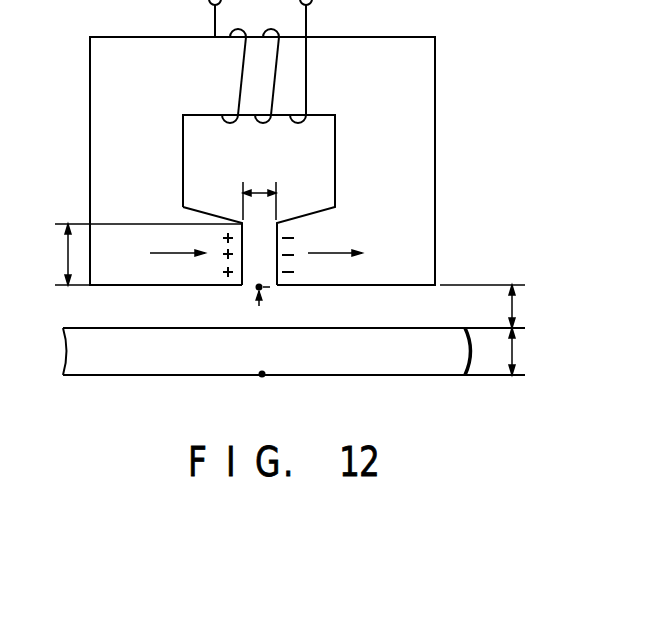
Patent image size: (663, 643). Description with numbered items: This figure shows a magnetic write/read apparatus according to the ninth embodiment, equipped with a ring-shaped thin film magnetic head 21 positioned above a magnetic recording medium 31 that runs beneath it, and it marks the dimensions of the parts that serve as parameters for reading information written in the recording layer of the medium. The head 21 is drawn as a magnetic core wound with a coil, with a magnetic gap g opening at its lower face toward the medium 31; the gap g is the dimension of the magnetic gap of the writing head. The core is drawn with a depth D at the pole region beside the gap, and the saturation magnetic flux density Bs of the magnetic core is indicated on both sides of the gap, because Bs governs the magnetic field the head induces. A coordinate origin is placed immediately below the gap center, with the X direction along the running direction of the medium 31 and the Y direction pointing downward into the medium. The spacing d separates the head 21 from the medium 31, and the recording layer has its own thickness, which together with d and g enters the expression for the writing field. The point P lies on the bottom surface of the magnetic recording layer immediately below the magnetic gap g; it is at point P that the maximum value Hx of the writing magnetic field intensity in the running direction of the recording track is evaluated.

The ring-shaped thin film magnetic head 21 is at (425, 143).
The magnetic recording medium 31 is at (366, 366).
The magnetic gap g is at (259, 189).
The pole depth D is at (144, 254).
The saturation magnetic flux density Bs is at (256, 242).
The X axis X is at (260, 274).
The Y axis Y is at (246, 302).
The point P is at (261, 394).
The spacing between head and medium d is at (490, 306).